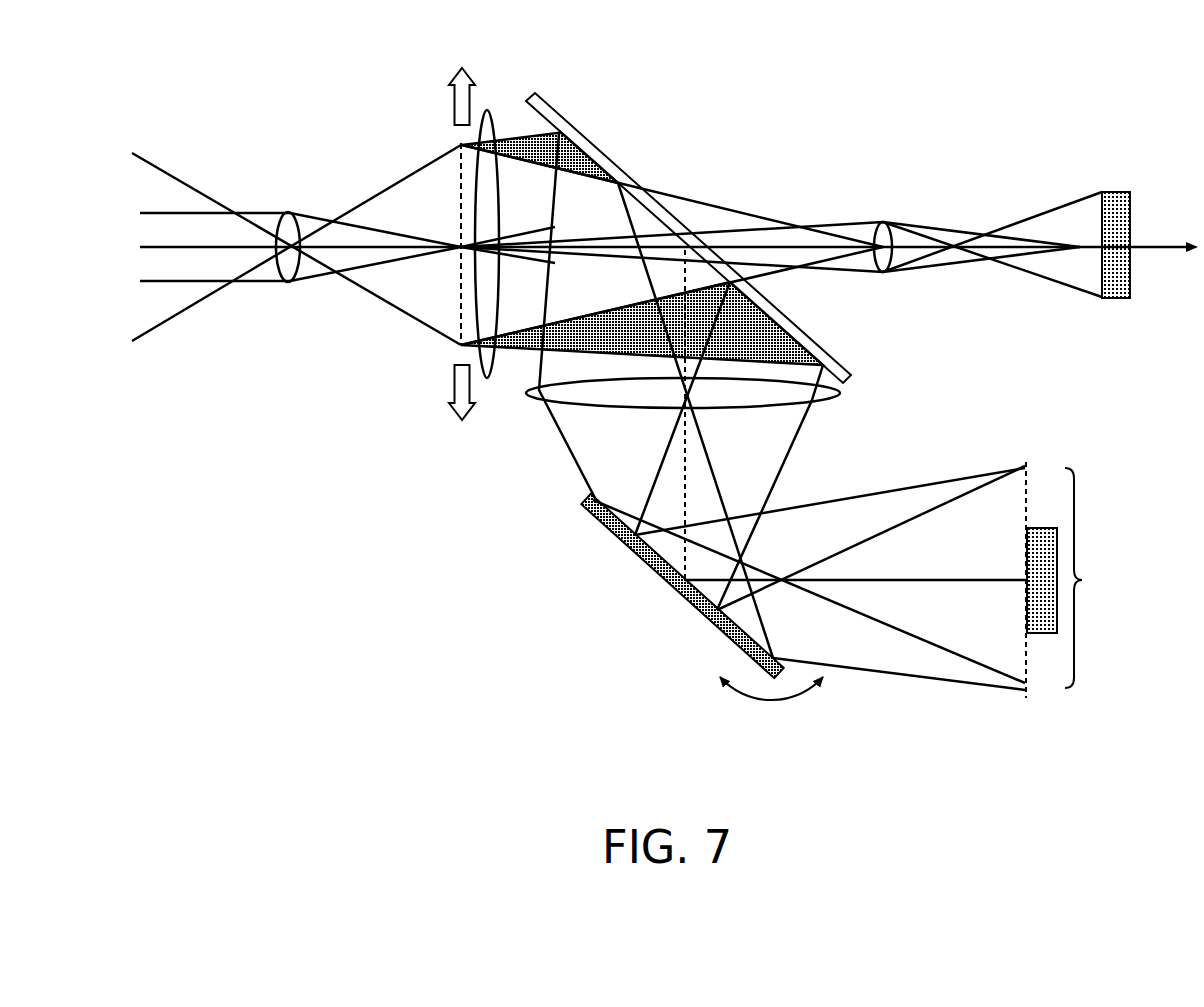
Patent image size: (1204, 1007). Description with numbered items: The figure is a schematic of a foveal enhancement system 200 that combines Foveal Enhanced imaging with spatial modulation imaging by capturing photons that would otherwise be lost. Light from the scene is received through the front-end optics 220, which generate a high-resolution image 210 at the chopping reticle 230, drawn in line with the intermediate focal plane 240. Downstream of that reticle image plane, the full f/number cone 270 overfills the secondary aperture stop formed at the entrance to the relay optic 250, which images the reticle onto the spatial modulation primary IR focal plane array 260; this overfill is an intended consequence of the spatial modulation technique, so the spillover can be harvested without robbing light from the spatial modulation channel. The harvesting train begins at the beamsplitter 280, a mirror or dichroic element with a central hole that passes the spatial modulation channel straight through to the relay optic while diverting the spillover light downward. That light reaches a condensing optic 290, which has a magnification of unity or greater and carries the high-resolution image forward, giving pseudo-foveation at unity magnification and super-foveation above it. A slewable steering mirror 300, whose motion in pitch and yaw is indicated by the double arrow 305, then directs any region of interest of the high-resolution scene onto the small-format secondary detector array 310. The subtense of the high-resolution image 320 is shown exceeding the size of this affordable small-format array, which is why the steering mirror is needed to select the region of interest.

The foveal enhancement system 200 is at (914, 76).
The high-resolution image 210 is at (435, 211).
The front-end optics 220 is at (286, 204).
The chopping reticle 230 is at (459, 183).
The intermediate focal plane 240 is at (456, 300).
The relay optic 250 is at (885, 218).
The spatial modulation primary IR focal plane array 260 is at (1112, 192).
The full f/number cone 270 is at (509, 130).
The beamsplitter 280 is at (805, 333).
The condensing optic 290 is at (527, 392).
The steering mirror 300 is at (660, 572).
The double arrow 305 is at (771, 719).
The secondary detector array 310 is at (1027, 606).
The subtense of the high-resolution image 320 is at (1080, 580).